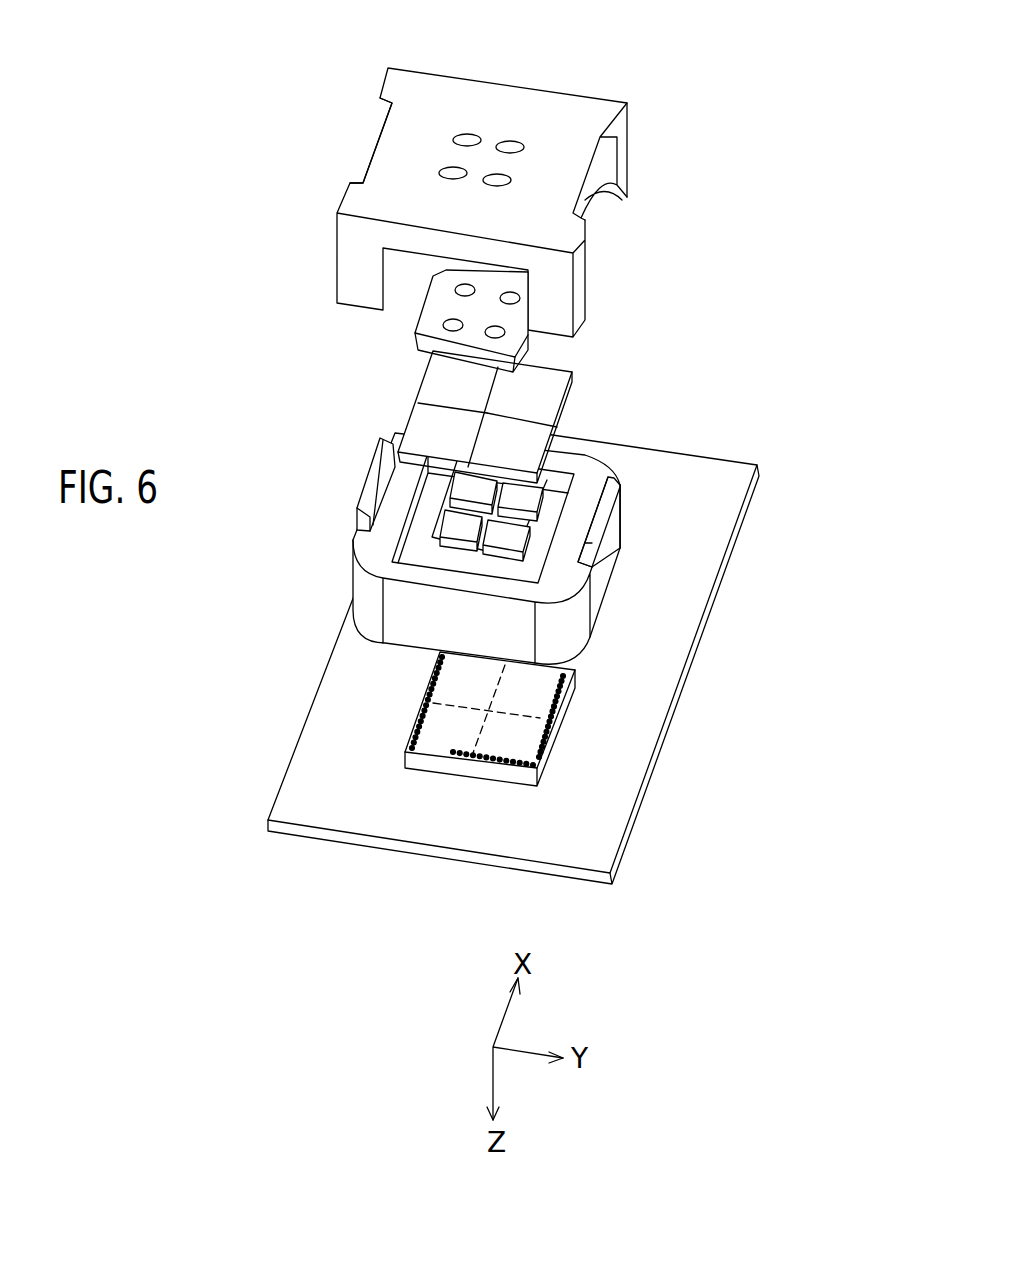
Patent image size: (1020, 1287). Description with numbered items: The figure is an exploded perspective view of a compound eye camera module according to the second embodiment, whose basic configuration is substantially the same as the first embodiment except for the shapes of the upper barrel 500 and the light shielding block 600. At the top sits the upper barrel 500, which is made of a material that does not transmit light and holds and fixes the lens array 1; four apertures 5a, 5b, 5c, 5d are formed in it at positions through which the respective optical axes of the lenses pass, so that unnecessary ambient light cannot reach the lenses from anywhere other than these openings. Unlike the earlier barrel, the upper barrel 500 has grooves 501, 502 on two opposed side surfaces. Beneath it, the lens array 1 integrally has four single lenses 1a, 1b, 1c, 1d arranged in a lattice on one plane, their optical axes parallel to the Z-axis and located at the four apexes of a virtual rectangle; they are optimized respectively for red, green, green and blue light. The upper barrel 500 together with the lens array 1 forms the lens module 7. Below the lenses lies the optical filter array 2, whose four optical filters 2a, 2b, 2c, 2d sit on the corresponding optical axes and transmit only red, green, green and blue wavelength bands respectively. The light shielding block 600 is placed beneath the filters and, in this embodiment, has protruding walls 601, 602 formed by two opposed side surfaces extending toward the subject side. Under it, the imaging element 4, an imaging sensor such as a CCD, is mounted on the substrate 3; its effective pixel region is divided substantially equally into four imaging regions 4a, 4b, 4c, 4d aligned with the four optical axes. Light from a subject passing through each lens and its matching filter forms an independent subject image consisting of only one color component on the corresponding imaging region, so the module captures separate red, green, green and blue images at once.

The lens array 1 is at (445, 304).
The lens 1a is at (455, 290).
The lens 1b is at (520, 298).
The lens 1c is at (453, 330).
The lens 1d is at (505, 333).
The optical filter array 2 is at (460, 417).
The optical filter 2a is at (433, 378).
The optical filter 2b is at (555, 385).
The optical filter 2c is at (423, 430).
The optical filter 2d is at (535, 437).
The substrate 3 is at (275, 792).
The imaging element 4 is at (496, 718).
The imaging region 4a is at (453, 682).
The imaging region 4b is at (557, 683).
The imaging region 4c is at (440, 723).
The imaging region 4d is at (537, 737).
The aperture 5a is at (467, 132).
The aperture 5b is at (510, 140).
The aperture 5c is at (440, 173).
The aperture 5d is at (500, 183).
The lens module 7 is at (446, 204).
The upper barrel 500 is at (467, 181).
The groove 501 is at (367, 162).
The groove 502 is at (627, 192).
The light shielding block 600 is at (532, 548).
The protruding wall 601 is at (380, 440).
The protruding wall 602 is at (616, 512).